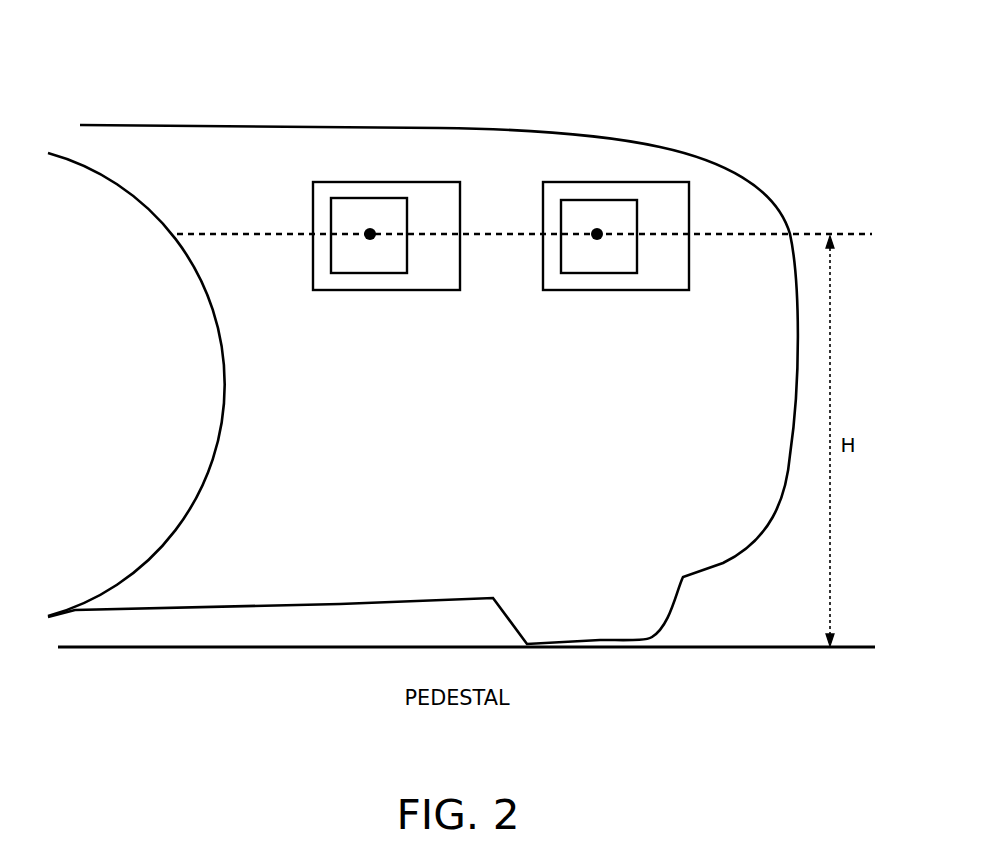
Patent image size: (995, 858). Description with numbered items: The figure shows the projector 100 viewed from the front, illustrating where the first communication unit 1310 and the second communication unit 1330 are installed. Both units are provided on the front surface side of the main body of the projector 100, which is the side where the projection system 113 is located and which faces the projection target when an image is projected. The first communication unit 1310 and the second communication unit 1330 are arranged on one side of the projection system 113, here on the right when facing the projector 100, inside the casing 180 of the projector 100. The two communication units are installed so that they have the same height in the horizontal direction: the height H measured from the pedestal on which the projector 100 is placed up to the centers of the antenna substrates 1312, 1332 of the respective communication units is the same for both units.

The projector 100 is at (460, 328).
The projection system 113 is at (182, 473).
The casing 180 is at (751, 181).
The first communication unit 1310 is at (420, 182).
The antenna substrate 1312 is at (360, 198).
The second communication unit 1330 is at (575, 182).
The antenna substrate 1332 is at (633, 200).